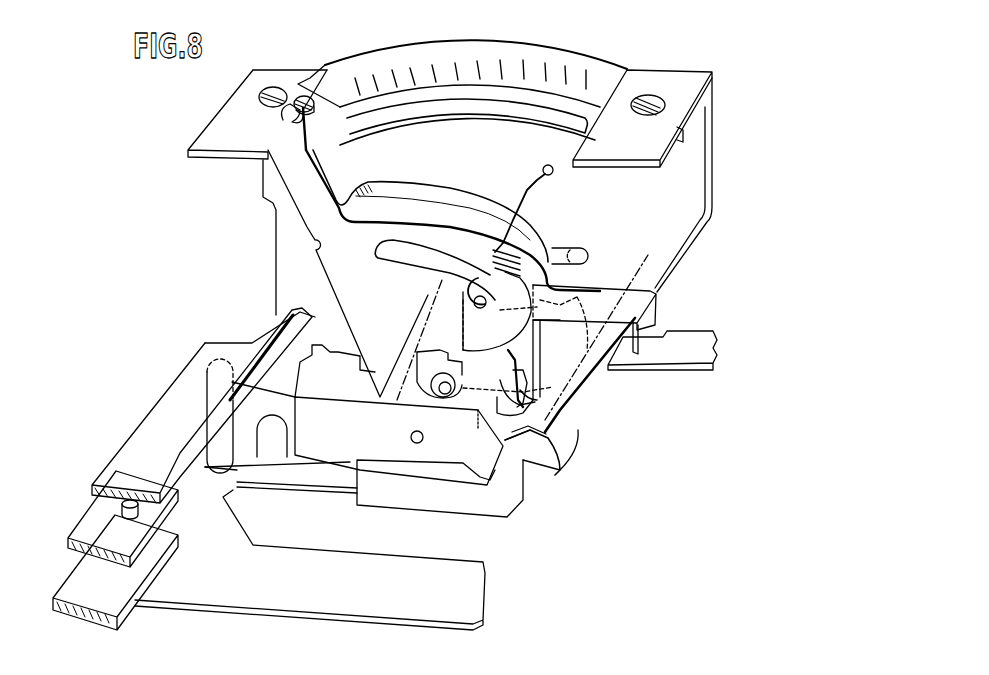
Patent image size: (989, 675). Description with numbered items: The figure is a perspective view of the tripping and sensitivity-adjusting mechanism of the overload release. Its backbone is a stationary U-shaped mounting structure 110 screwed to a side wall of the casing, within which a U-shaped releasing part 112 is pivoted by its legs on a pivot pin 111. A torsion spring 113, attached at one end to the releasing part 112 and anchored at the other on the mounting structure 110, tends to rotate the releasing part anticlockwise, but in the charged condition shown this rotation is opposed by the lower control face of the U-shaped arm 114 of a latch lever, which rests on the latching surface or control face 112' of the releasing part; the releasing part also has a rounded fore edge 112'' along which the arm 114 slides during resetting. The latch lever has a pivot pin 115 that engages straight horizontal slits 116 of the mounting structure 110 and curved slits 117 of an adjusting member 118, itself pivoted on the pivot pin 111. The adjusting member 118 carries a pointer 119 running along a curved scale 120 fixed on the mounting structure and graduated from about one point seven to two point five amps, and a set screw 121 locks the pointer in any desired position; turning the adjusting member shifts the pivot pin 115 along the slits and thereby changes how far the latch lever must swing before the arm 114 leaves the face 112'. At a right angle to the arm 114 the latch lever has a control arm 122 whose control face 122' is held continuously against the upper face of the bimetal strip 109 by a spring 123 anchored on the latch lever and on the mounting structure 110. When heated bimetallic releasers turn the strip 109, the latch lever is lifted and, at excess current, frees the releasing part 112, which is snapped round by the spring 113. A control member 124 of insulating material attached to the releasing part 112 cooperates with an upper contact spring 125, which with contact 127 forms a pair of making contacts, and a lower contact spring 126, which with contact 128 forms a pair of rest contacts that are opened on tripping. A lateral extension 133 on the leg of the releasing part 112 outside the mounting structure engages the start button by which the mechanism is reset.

The bimetal strip 109 is at (690, 342).
The U-shaped mounting structure 110 is at (680, 218).
The pivot pin 111 is at (424, 437).
The U-shaped releasing part 112 is at (354, 419).
The control face 112' is at (560, 404).
The rounded fore edge 112'' is at (565, 450).
The torsion spring 113 is at (347, 358).
The U-shaped arm of latch lever 114 is at (523, 345).
The pivot pin of latch lever 115 is at (480, 308).
The straight horizontal slits 116 is at (580, 250).
The curved slits 117 is at (433, 207).
The adjusting member 118 is at (343, 267).
The pointer 119 is at (287, 140).
The curved scale 120 is at (503, 52).
The set screw 121 is at (303, 96).
The control arm 122 is at (595, 297).
The control face 122' is at (653, 365).
The spring 123 is at (525, 195).
The control member 124 is at (278, 411).
The upper contact spring 125 is at (155, 420).
The lower contact spring 126 is at (187, 593).
The making contact 127 is at (173, 510).
The rest contact 128 is at (170, 555).
The lateral extension 133 is at (488, 467).